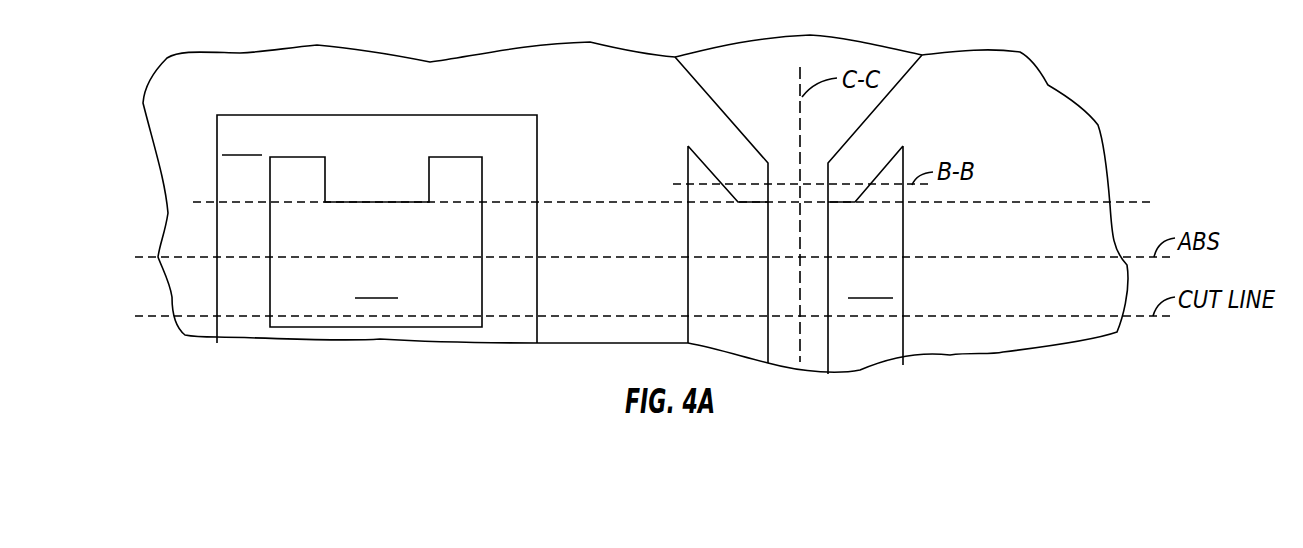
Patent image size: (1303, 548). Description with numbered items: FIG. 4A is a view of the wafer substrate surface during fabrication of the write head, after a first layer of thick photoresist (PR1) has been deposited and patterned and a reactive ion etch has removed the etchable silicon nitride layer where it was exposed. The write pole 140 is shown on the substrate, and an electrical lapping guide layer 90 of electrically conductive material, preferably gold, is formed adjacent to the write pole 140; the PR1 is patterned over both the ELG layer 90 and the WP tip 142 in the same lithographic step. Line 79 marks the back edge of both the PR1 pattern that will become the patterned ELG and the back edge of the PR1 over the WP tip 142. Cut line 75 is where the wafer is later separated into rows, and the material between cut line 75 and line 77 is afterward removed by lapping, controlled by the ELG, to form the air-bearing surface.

The electrical lapping guide (ELG) layer 90 is at (255, 114).
The write pole (WP) 140 is at (737, 67).
The line 79 is at (360, 202).
The line 77 is at (712, 255).
The WP tip 142 is at (808, 232).
The cut line 75 is at (950, 316).